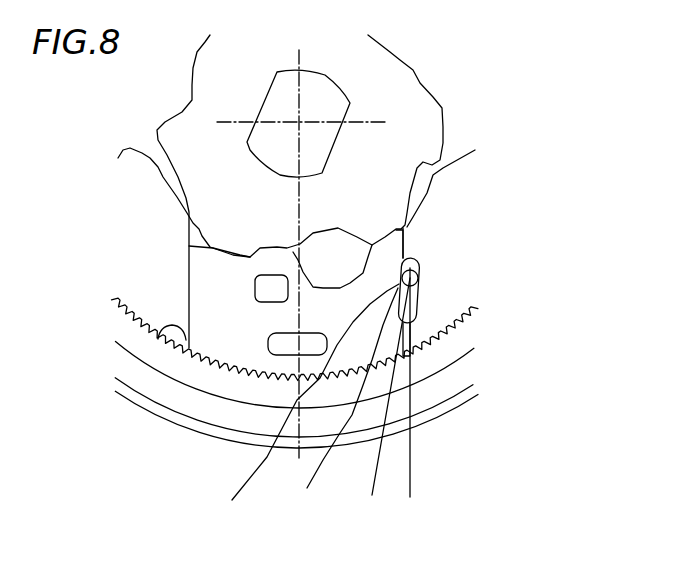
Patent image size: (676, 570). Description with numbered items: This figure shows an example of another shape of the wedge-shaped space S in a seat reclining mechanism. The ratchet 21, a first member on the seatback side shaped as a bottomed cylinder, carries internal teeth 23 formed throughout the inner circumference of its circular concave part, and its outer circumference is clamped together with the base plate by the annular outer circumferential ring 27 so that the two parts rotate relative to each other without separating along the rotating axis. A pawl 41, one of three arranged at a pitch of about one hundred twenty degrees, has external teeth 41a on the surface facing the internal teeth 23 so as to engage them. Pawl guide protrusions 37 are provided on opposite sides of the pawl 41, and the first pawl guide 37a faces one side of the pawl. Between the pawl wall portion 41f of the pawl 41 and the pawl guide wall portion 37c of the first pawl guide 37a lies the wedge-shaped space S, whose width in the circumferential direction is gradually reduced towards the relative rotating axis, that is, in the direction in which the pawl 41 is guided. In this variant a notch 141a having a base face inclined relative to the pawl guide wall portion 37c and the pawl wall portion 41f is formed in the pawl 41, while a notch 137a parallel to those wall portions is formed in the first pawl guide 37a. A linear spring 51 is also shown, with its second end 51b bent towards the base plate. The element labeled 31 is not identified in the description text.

The ratchet 21 is at (452, 385).
The internal teeth 23 is at (148, 333).
The outer circumferential ring 27 is at (443, 418).
The housing 31 is at (413, 114).
The pawl guide protrusion 37 is at (150, 285).
The first pawl guide 37a is at (412, 242).
The pawl guide wall portion 37c is at (333, 401).
The pawl 41 is at (224, 332).
The external teeth 41a is at (240, 373).
The pawl wall portion 41f is at (407, 340).
The linear spring 51 is at (511, 228).
The second end 51b is at (423, 266).
The notch 137a is at (419, 293).
The notch 141a is at (297, 404).
The wedge-shaped space S is at (421, 313).